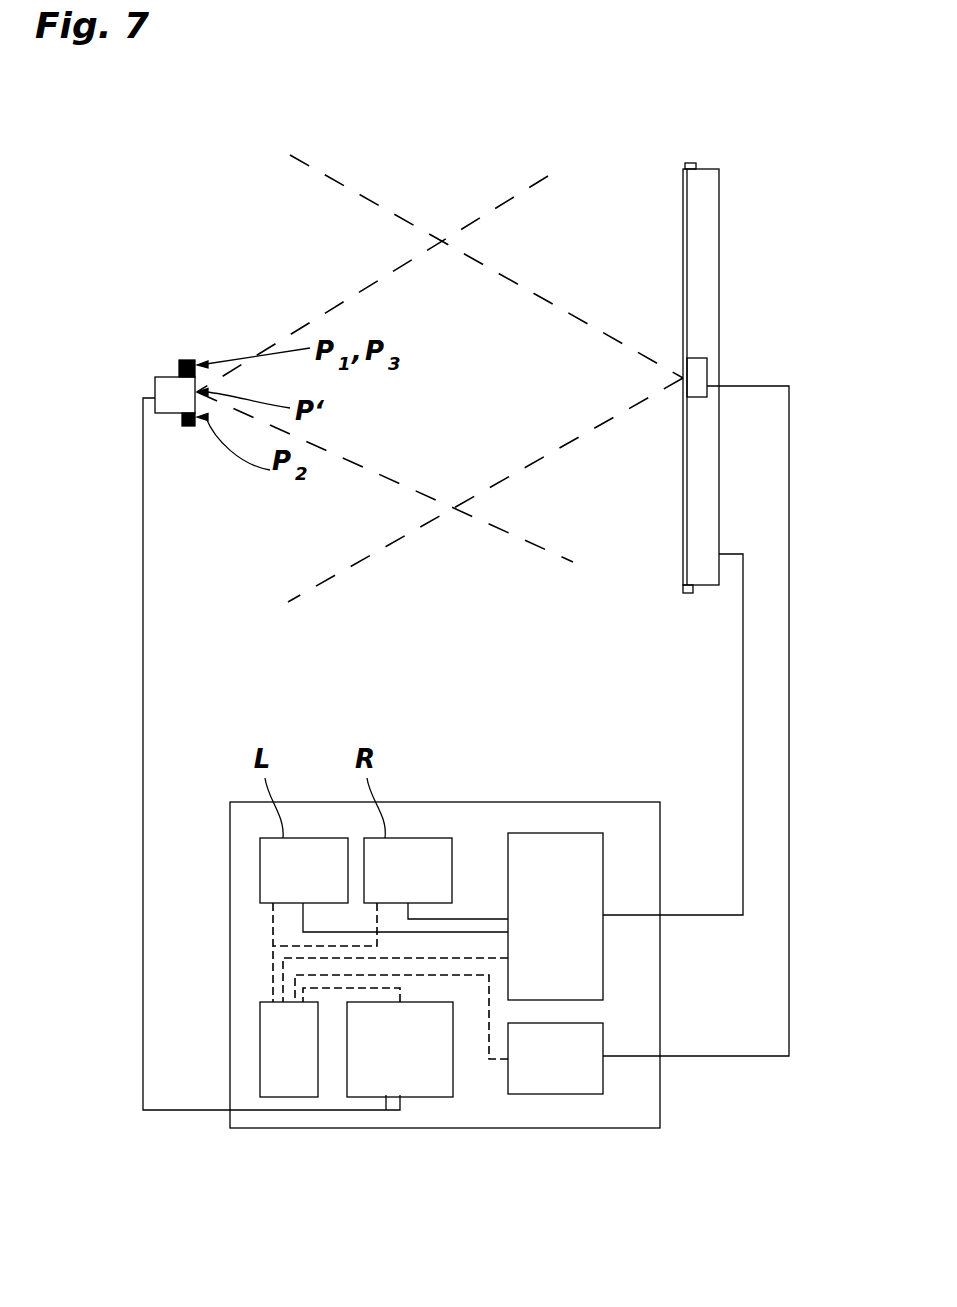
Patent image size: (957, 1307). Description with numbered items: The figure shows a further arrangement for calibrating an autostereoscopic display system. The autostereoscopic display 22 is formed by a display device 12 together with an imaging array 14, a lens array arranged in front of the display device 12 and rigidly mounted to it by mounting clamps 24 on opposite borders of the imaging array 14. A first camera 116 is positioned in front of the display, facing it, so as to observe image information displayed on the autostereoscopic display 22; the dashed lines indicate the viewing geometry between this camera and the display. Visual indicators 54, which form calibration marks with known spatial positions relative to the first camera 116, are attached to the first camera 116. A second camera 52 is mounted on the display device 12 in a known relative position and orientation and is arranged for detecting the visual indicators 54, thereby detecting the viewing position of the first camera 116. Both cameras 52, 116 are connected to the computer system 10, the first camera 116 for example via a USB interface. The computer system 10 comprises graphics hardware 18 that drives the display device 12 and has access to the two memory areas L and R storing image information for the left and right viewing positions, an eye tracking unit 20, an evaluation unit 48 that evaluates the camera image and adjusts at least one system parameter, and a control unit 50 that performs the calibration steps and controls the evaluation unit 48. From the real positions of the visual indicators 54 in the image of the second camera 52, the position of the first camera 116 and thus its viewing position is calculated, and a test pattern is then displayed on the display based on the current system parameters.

The computer system 10 is at (578, 793).
The display device 12 is at (700, 175).
The imaging array 14 is at (683, 438).
The graphics hardware 18 is at (603, 877).
The eye tracking unit 20 is at (603, 1037).
The autostereoscopic display 22 is at (692, 375).
The mounting clamps 24 is at (690, 163).
The evaluation unit 48 is at (383, 1097).
The control unit 50 is at (283, 1097).
The second camera 52 is at (703, 376).
The visual indicators 54 is at (193, 360).
The first camera 116 is at (157, 395).